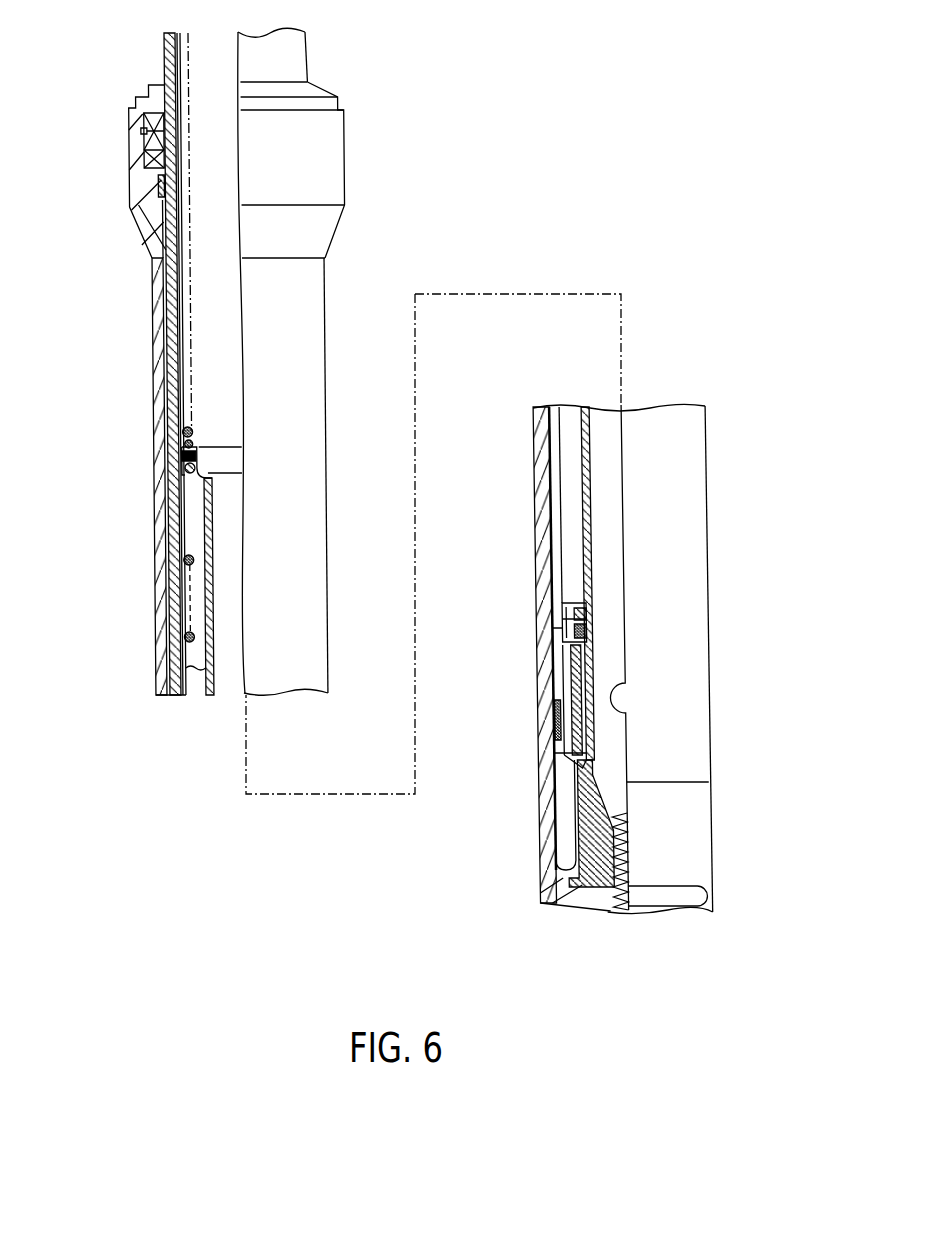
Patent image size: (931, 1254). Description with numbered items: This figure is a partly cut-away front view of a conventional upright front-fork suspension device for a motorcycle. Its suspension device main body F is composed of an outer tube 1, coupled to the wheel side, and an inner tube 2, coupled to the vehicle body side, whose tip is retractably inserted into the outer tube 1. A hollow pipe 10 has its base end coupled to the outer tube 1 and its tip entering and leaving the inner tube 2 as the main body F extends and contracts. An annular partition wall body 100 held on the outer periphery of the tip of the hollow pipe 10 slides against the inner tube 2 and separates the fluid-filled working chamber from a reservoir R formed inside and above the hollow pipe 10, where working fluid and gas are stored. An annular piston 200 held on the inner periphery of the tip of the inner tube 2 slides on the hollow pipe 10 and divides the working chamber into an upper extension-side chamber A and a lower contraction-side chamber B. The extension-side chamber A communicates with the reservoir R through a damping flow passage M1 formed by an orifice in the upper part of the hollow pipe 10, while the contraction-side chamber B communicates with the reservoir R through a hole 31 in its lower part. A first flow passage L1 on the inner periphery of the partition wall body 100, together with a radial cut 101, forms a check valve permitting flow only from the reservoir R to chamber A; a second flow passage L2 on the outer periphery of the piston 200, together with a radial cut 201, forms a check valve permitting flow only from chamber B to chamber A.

The inner tube 2 is at (164, 55).
The hollow pipe 10 is at (205, 668).
The partition wall body 100 is at (180, 458).
The cut 101 is at (180, 475).
The first flow passage L1 is at (197, 460).
The damping flow passage M1 is at (210, 562).
The reservoir R is at (218, 342).
The suspension device main body F is at (352, 165).
The outer tube 1 is at (537, 527).
The extension-side chamber A is at (570, 443).
The piston 200 is at (590, 632).
The cut 201 is at (583, 620).
The second flow passage L2 is at (560, 628).
The hole 31 is at (598, 740).
The contraction-side chamber B is at (567, 820).